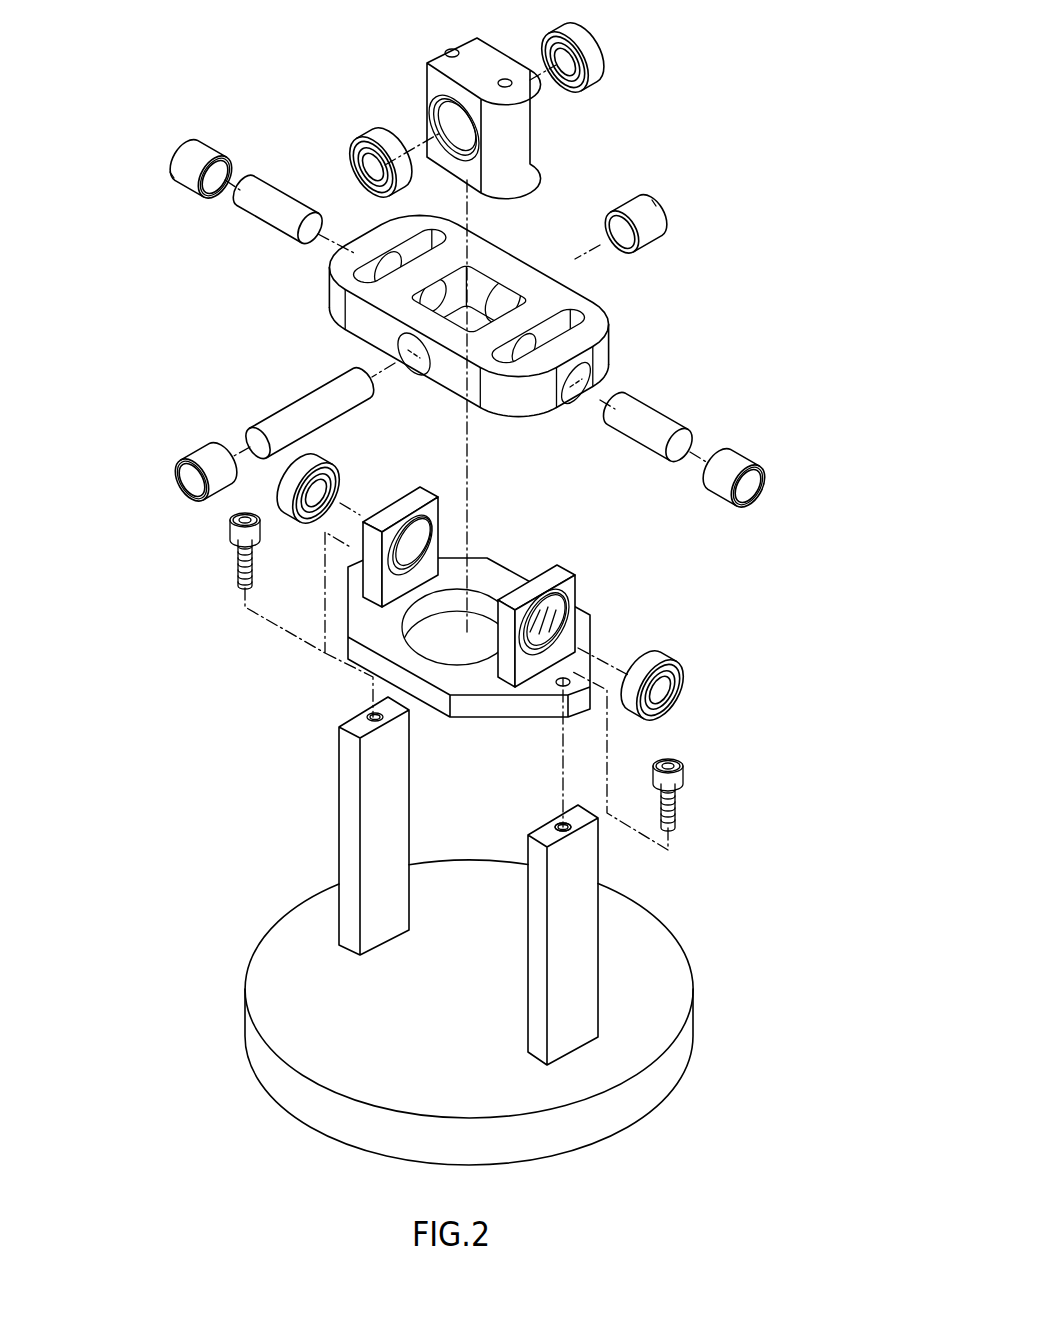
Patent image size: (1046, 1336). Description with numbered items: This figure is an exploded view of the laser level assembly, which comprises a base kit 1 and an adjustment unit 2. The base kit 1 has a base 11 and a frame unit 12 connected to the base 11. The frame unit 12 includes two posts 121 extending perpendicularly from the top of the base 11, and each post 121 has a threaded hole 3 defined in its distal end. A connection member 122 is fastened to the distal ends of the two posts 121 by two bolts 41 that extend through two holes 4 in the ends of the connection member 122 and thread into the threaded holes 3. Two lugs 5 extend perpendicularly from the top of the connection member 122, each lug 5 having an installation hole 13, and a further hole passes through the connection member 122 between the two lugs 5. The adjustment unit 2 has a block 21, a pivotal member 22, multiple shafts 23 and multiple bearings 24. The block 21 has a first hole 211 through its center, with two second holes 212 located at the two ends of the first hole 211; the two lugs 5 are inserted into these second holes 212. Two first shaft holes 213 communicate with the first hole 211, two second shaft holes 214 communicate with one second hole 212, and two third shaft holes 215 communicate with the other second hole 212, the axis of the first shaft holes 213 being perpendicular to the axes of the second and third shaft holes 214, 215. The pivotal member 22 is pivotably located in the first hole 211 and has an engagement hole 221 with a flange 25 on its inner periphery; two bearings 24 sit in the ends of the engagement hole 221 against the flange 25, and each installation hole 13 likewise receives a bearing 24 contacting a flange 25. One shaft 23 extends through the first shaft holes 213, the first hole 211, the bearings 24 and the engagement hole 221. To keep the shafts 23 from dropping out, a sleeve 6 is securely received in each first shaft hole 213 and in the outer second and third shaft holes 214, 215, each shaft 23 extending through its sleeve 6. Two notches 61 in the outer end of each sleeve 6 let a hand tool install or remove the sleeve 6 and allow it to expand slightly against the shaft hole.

The base kit 1 is at (185, 755).
The base 11 is at (307, 920).
The frame unit 12 is at (235, 700).
The post 121 is at (348, 753).
The connection member 122 is at (370, 663).
The installation hole 13 is at (420, 530).
The adjustment unit 2 is at (642, 137).
The block 21 is at (563, 297).
The first hole 211 is at (487, 280).
The second hole 212 is at (440, 245).
The first shaft hole 213 is at (395, 356).
The second shaft hole 214 is at (373, 290).
The third shaft hole 215 is at (583, 383).
The pivotal member 22 is at (440, 62).
The engagement hole 221 is at (436, 128).
The shaft 23 is at (273, 222).
The bearing 24 is at (600, 72).
The flange 25 is at (440, 110).
The threaded hole 3 is at (563, 825).
The hole 4 is at (573, 678).
The bolt 41 is at (682, 773).
The lug 5 is at (412, 495).
The sleeve 6 is at (652, 205).
The notch 61 is at (656, 203).